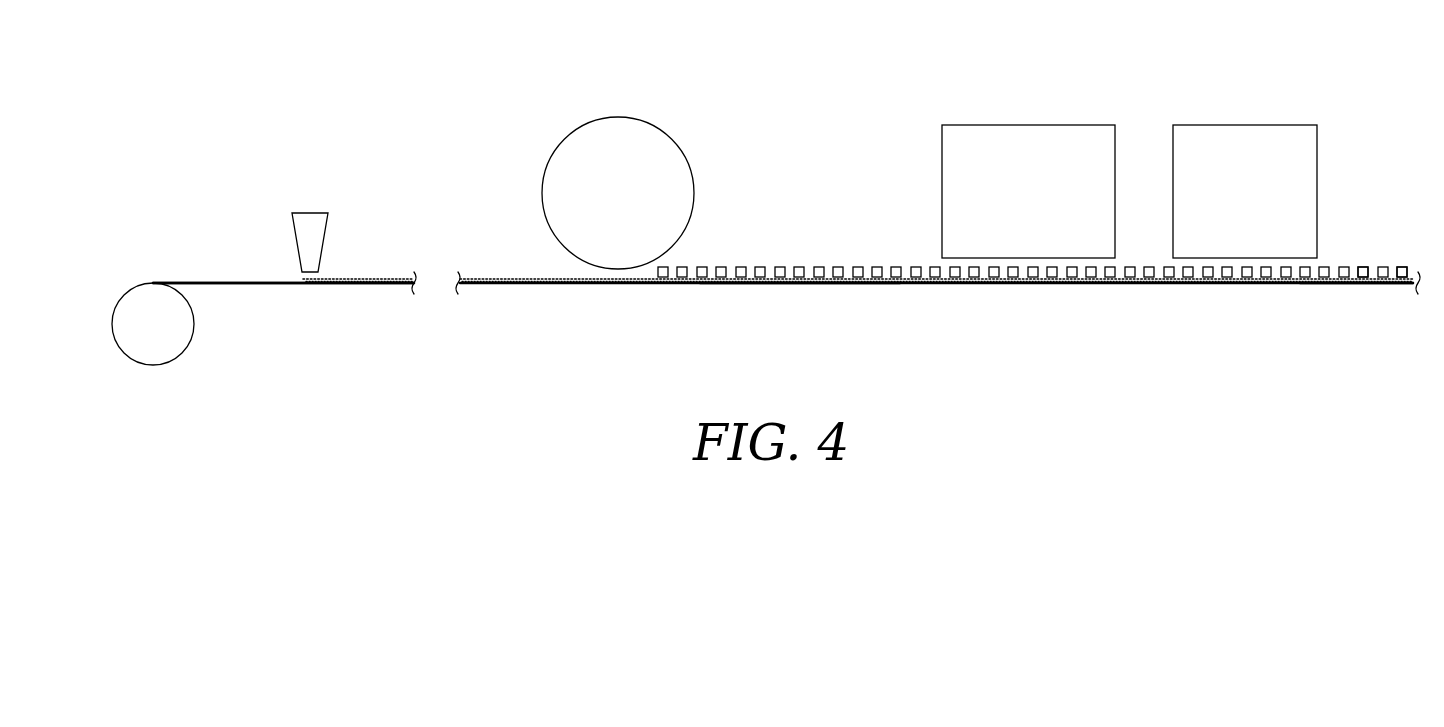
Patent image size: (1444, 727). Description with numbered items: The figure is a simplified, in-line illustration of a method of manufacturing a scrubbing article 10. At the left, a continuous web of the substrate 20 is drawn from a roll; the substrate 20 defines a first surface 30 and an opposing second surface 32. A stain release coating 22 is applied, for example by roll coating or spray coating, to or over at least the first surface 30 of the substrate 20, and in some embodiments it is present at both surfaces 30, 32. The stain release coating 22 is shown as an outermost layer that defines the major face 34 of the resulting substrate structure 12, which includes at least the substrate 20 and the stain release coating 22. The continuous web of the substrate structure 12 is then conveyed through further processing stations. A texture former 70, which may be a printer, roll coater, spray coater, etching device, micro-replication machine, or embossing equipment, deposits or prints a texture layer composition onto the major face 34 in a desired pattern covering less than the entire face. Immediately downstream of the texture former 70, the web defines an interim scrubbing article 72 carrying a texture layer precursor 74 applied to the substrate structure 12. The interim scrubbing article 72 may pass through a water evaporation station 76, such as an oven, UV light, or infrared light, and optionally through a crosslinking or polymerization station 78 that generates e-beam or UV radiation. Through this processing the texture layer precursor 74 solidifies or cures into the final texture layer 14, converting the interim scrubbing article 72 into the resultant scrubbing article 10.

The scrubbing article 10 is at (1383, 296).
The substrate structure 12 is at (351, 290).
The texture layer 14 is at (1362, 266).
The substrate 20 is at (187, 277).
The stain release coating 22 is at (367, 277).
The first surface 30 is at (237, 280).
The second surface 32 is at (257, 287).
The major face 34 is at (393, 273).
The texture former 70 is at (667, 130).
The interim scrubbing article 72 is at (800, 296).
The texture layer precursor 74 is at (819, 266).
The water evaporation station 76 is at (1025, 125).
The crosslinking or polymerization station 78 is at (1245, 123).